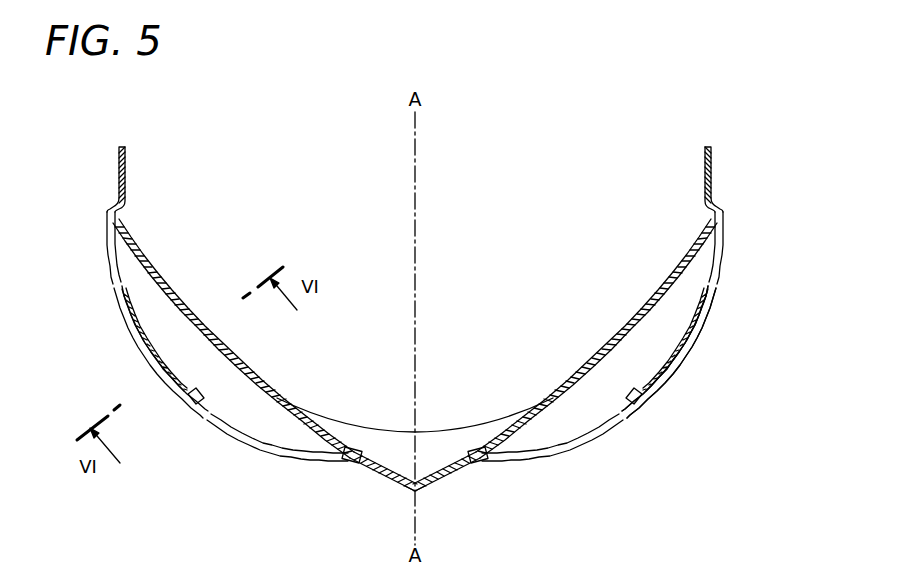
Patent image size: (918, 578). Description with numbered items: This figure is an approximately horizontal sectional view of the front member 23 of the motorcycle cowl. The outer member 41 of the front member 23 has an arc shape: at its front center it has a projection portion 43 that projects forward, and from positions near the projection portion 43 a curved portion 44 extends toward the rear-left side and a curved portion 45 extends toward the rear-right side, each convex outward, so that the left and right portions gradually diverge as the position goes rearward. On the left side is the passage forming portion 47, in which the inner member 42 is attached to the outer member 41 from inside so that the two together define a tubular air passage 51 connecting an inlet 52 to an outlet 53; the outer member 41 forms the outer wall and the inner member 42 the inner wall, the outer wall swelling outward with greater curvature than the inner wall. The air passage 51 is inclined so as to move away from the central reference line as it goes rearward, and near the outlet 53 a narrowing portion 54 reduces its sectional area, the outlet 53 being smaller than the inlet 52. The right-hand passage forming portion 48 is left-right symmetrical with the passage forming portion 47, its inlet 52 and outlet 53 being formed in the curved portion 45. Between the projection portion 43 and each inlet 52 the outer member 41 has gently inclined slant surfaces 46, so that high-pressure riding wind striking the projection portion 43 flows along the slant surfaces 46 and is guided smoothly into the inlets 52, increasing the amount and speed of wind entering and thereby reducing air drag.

The front member 23 is at (498, 484).
The outer member 41 is at (717, 291).
The inner member 42 is at (257, 382).
The projection portion 43 is at (413, 491).
The curved portion 44 is at (682, 363).
The curved portion 45 is at (136, 344).
The slant surface 46 is at (377, 474).
The passage forming portion 47 is at (628, 311).
The passage forming portion 48 is at (201, 311).
The air passage 51 is at (197, 364).
The inlet 52 is at (262, 451).
The outlet 53 is at (108, 250).
The narrowing portion 54 is at (131, 318).